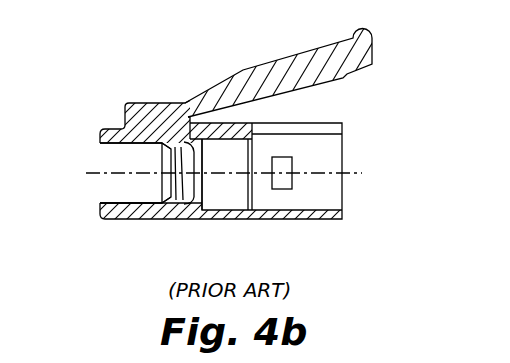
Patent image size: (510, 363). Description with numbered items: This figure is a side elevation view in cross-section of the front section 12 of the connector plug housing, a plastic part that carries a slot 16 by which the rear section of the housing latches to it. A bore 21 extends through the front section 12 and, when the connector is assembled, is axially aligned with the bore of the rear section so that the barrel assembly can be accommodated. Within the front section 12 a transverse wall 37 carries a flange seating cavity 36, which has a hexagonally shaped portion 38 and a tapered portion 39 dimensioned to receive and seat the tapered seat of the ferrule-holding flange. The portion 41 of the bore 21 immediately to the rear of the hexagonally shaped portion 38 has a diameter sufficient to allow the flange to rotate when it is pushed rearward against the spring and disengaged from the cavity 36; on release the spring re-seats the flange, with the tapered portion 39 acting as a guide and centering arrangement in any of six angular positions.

The front section 12 is at (114, 124).
The slot 16 is at (292, 162).
The bore 21 is at (113, 203).
The flange seating cavity 36 is at (188, 194).
The transverse wall 37 is at (181, 141).
The hexagonally shaped portion 38 is at (203, 158).
The tapered portion 39 is at (177, 142).
The bore portion 41 is at (244, 213).